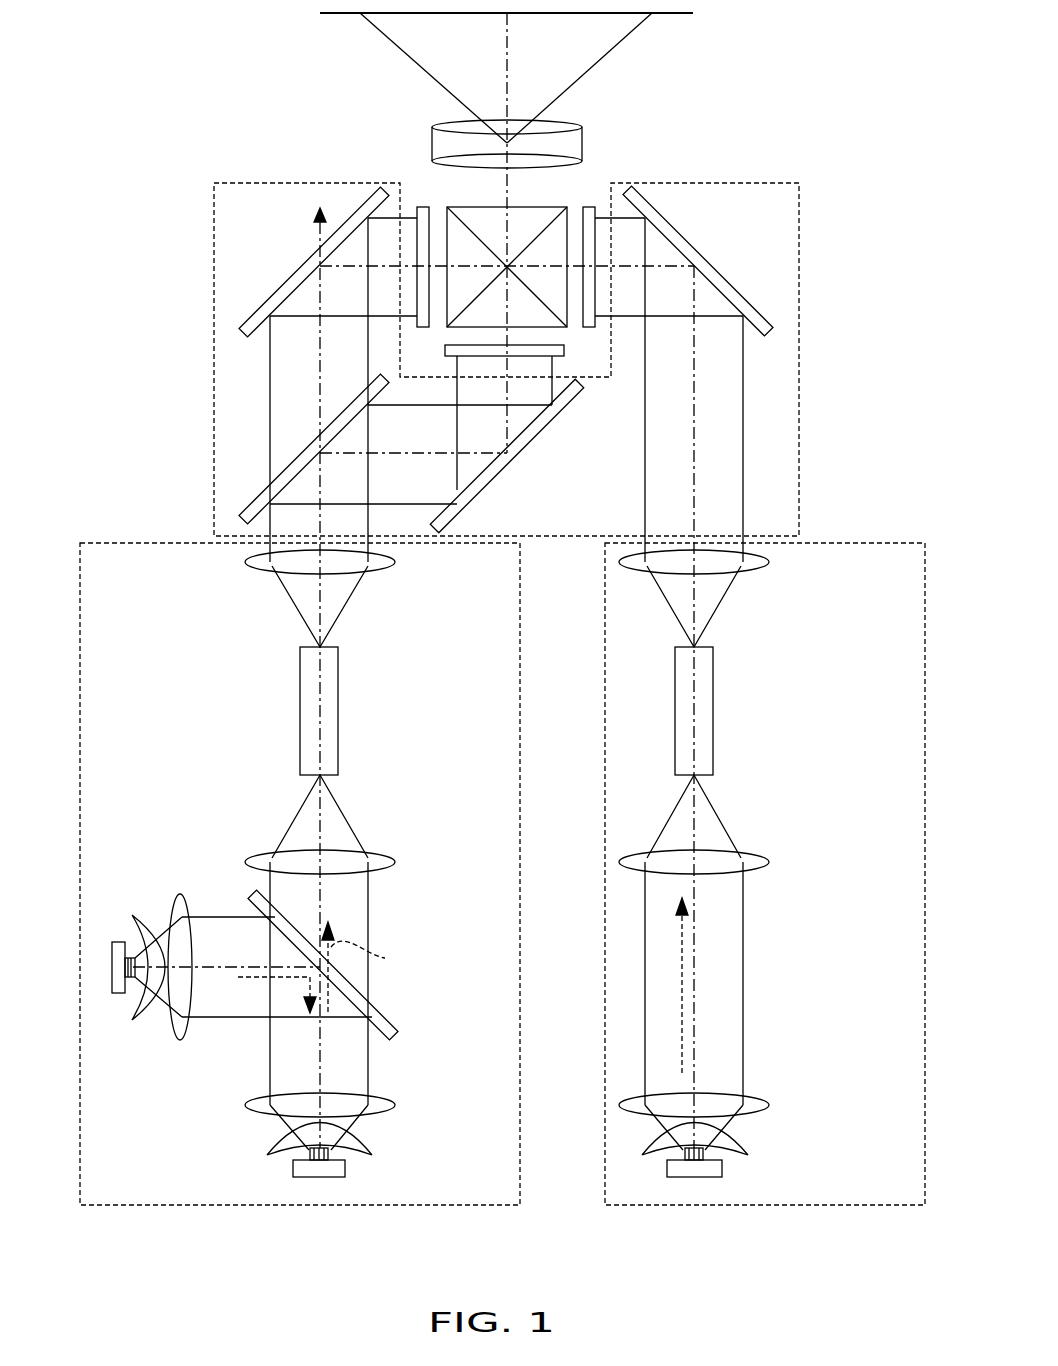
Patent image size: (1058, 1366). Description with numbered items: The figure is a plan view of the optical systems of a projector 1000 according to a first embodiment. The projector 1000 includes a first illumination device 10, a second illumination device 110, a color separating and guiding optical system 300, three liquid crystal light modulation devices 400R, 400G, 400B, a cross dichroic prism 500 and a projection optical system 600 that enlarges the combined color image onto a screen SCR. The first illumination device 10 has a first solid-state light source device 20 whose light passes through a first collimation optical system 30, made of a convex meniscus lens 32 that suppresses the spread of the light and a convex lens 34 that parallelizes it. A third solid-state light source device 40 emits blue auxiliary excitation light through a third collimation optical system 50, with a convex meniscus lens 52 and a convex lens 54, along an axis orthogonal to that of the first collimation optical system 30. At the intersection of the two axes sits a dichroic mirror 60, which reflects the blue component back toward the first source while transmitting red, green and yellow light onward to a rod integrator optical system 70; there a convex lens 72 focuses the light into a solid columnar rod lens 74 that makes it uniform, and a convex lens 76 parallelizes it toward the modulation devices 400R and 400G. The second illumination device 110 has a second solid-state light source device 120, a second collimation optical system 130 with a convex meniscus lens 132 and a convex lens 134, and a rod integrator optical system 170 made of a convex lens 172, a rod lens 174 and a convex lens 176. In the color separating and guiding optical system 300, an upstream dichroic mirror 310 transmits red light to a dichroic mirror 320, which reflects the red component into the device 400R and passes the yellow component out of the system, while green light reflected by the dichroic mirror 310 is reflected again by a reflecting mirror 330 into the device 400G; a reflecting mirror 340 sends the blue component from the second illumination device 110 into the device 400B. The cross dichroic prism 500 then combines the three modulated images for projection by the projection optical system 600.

The projector 1000 is at (889, 31).
The screen SCR is at (676, 15).
The projection optical system 600 is at (431, 143).
The cross dichroic prism 500 is at (530, 207).
The liquid crystal light modulation device for a red light component 400R is at (423, 207).
The liquid crystal light modulation device for a green light component 400G is at (565, 350).
The liquid crystal light modulation device for a blue light component 400B is at (590, 207).
The color separating and guiding optical system 300 is at (213, 368).
The dichroic mirror 310 is at (253, 503).
The dichroic mirror 320 is at (253, 315).
The reflecting mirror 330 is at (489, 487).
The reflecting mirror for a blue light component 340 is at (766, 315).
The first illumination device 10 is at (202, 1205).
The first solid-state light source device 20 is at (280, 1164).
The first collimation optical system 30 is at (379, 1118).
The convex meniscus lens 32 is at (362, 1139).
The convex lens 34 is at (395, 1105).
The third solid-state light source device 40 is at (122, 1008).
The third collimation optical system 50 is at (178, 1016).
The convex meniscus lens 52 is at (136, 1022).
The convex lens 54 is at (180, 1040).
The dichroic mirror 60 is at (398, 1028).
The rod integrator optical system 70 is at (256, 718).
The convex lens 72 is at (287, 864).
The rod lens 74 is at (300, 692).
The convex lens 76 is at (246, 562).
The second illumination device 110 is at (737, 1205).
The second solid-state light source device 120 is at (747, 1166).
The second collimation optical system 130 is at (767, 1100).
The convex meniscus lens 132 is at (746, 1140).
The convex lens 134 is at (768, 1100).
The rod integrator optical system 170 is at (767, 718).
The convex lens 172 is at (734, 864).
The rod lens 174 is at (713, 692).
The convex lens 176 is at (770, 560).